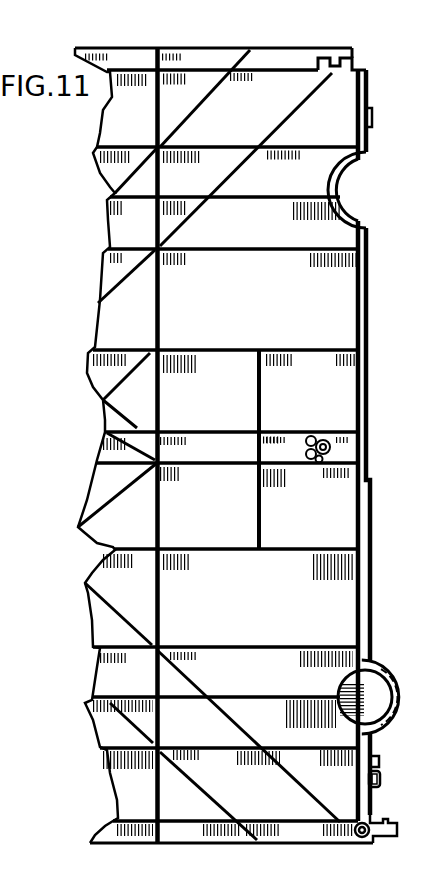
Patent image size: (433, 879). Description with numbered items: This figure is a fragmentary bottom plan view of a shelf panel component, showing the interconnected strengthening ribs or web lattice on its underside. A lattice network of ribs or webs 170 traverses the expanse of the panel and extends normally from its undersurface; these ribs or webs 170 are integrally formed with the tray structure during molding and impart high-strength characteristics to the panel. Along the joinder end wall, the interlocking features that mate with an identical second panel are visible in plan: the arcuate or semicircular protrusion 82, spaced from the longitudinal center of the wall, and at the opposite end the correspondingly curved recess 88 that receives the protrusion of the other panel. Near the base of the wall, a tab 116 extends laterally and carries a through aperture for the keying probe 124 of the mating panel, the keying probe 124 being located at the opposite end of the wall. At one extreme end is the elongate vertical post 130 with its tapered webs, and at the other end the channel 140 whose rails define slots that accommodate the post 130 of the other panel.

The channel 140 is at (344, 54).
The keying probe 124 is at (383, 136).
The curved recess 88 is at (347, 197).
The ribs or webs 170 is at (153, 125).
The vertical post 130 is at (0, 156).
The protrusion 82 is at (373, 683).
The tab 116 is at (390, 762).